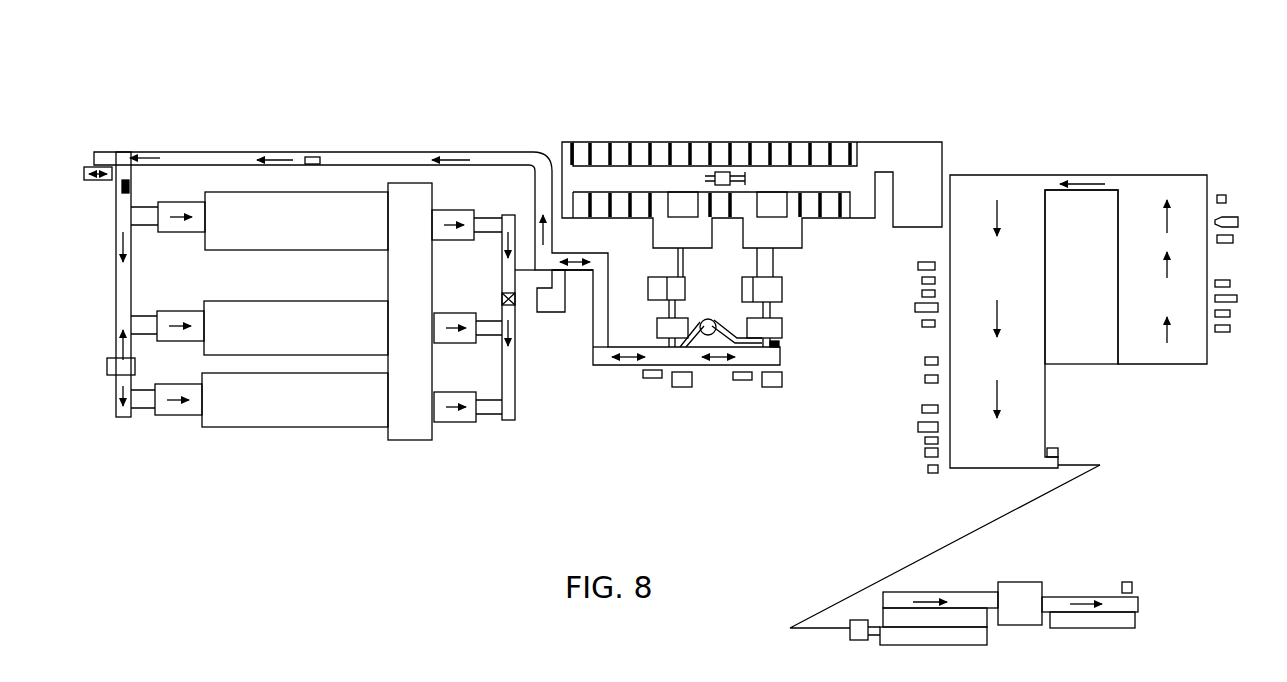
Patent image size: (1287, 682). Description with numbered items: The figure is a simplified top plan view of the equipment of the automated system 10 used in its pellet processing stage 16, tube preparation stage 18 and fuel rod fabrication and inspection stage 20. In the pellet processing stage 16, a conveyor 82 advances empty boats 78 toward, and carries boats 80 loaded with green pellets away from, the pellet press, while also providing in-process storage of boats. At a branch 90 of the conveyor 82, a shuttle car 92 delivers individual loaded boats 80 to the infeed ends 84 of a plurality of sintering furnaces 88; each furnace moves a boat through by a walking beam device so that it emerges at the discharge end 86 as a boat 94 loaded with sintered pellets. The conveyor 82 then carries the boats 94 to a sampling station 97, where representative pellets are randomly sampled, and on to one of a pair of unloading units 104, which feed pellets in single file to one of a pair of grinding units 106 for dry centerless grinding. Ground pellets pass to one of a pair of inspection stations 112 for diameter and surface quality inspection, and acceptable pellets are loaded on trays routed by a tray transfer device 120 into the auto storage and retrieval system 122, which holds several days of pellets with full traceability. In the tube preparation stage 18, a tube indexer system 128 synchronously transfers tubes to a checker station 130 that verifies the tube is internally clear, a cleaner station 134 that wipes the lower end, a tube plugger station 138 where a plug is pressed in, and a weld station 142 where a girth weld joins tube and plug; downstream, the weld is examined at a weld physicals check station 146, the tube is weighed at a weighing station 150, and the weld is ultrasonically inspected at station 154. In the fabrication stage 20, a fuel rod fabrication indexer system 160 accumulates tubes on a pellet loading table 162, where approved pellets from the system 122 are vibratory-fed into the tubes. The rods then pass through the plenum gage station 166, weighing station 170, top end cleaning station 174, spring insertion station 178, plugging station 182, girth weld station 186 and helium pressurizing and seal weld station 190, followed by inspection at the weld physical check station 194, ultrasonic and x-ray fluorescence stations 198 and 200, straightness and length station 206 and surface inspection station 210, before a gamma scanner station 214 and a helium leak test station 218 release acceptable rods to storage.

The automated system 10 is at (866, 80).
The pellet processing stage 16 is at (401, 120).
The tube preparation stage 18 is at (1137, 165).
The fuel rod fabrication and inspection stage 20 is at (900, 490).
The empty boat 78 is at (313, 156).
The loaded boat 80 is at (130, 187).
The conveyor 82 is at (204, 148).
The infeed end 84 is at (185, 233).
The discharge end 86 is at (462, 241).
The sintering furnace 88 is at (317, 311).
The branch 90 is at (116, 232).
The shuttle car 92 is at (110, 368).
The boat loaded with sintered pellets 94 is at (514, 305).
The sampling station 97 is at (560, 313).
The unloading unit 104 is at (683, 388).
The grinding unit 106 is at (747, 326).
The inspection station 112 is at (648, 285).
The tray transfer device 120 is at (725, 171).
The auto storage and retrieval system 122 is at (789, 140).
The tube indexer system 128 is at (1212, 265).
The checker station 130 is at (1222, 333).
The cleaner station 134 is at (1232, 314).
The tube plugger station 138 is at (1238, 299).
The weld station 142 is at (1232, 284).
The weld physicals check station 146 is at (1226, 197).
The weighing station 150 is at (1235, 217).
The ultrasonic inspection station 154 is at (1233, 235).
The fuel rod fabrication indexer system 160 is at (1048, 243).
The pellet loading table 162 is at (972, 190).
The plenum gage station 166 is at (918, 266).
The weighing station 170 is at (922, 280).
The top rod end cleaning station 174 is at (922, 293).
The plenum spring insertion station 178 is at (915, 306).
The plugging station 182 is at (922, 323).
The girth weld station 186 is at (925, 361).
The pressurizing station 190 is at (925, 379).
The weld physical check station 194 is at (922, 409).
The ultrasonic inspection station 198 is at (918, 427).
The x-ray fluorescence inspection station 200 is at (925, 440).
The straightness and length check station 206 is at (925, 452).
The surface inspection station 210 is at (928, 469).
The gamma scanner station 214 is at (1022, 582).
The helium leak test station 218 is at (1130, 582).